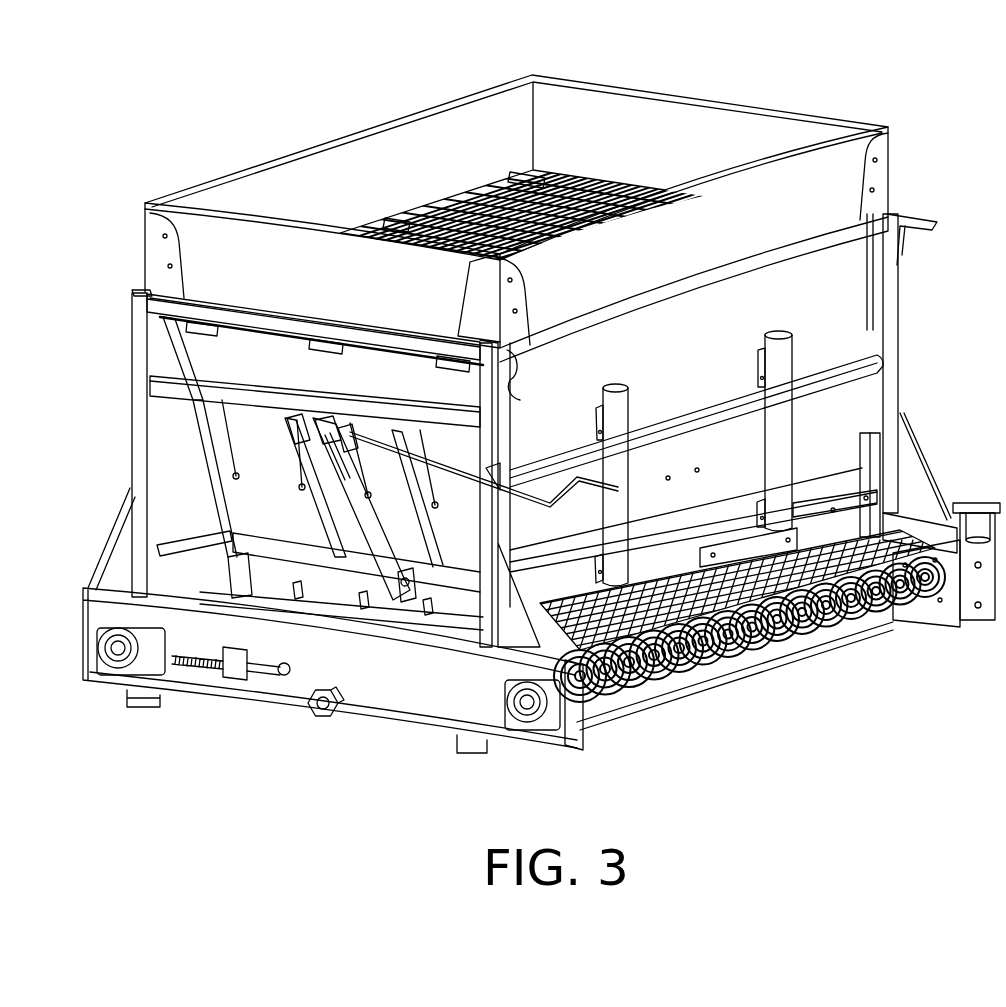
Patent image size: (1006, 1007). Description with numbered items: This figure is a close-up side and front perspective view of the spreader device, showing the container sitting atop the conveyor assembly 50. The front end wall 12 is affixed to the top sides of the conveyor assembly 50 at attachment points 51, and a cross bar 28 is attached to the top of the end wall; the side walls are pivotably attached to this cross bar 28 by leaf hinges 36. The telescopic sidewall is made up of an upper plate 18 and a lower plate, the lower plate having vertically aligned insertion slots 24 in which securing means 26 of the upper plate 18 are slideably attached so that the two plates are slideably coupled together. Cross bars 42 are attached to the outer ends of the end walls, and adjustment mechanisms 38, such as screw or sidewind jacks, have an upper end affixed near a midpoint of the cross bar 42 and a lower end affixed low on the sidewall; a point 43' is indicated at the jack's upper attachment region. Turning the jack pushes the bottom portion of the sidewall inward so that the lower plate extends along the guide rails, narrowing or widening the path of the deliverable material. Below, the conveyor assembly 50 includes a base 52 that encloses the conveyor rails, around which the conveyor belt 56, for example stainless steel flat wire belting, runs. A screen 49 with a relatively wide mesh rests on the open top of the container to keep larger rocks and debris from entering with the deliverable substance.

The front end wall 12 is at (833, 418).
The upper plate 18 is at (445, 453).
The insertion slots 24 is at (290, 475).
The securing means 26 is at (232, 477).
The cross bar 28 is at (230, 297).
The leaf hinges 36 is at (136, 292).
The adjustment mechanisms 38 is at (357, 553).
The cross bars 42 is at (150, 386).
The linkage 43' is at (432, 426).
The screen 49 is at (594, 143).
The conveyor assembly 50 is at (683, 677).
The conveyor belt 56 is at (683, 677).
The attachment points 51 is at (115, 576).
The base 52 is at (415, 706).